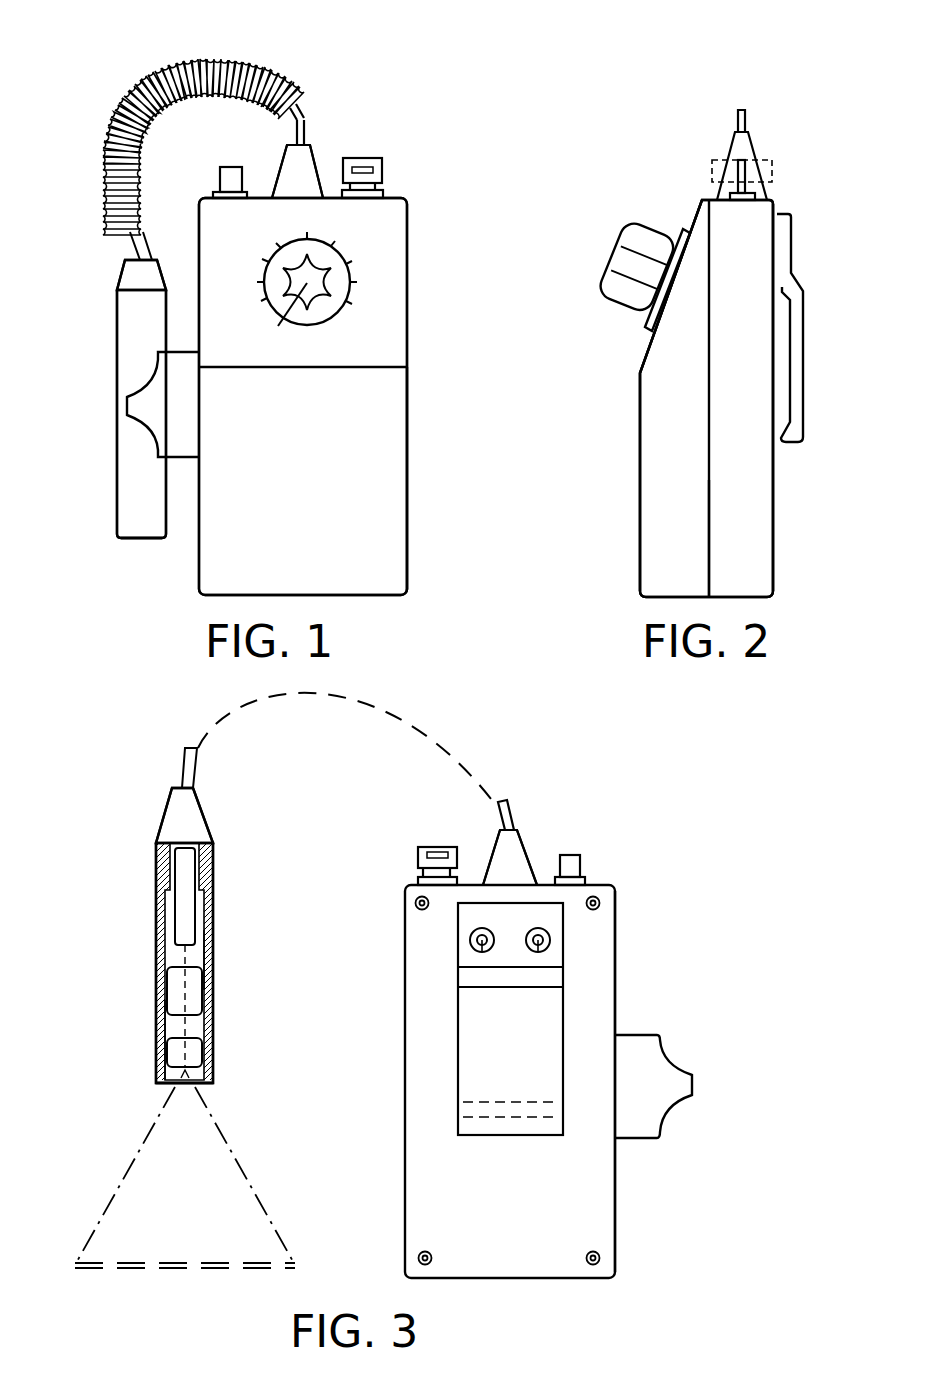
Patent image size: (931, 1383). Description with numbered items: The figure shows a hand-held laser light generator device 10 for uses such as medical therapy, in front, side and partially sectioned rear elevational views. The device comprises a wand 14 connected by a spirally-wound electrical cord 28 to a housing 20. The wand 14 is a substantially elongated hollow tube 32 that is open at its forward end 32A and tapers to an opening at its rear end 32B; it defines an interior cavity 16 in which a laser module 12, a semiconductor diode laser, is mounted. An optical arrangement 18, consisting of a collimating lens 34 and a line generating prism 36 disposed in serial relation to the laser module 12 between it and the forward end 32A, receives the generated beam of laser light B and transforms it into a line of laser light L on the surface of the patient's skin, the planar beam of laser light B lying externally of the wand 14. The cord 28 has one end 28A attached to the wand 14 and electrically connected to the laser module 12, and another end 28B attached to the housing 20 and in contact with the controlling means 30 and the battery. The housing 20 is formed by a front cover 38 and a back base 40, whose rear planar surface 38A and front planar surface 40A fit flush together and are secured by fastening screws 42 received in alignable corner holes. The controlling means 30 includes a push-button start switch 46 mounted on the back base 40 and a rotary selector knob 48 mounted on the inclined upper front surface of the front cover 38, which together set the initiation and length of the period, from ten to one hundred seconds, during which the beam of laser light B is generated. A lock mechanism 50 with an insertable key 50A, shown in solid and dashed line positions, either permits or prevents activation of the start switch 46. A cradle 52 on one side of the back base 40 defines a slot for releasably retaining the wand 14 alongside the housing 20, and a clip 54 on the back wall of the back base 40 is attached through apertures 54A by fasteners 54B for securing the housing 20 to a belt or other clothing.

In FIG. 1, the hand-held laser light generator device 10 is at (436, 196).
In FIG. 2, the hand-held laser light generator device 10 is at (800, 177).
In FIG. 3, the laser module 12 is at (187, 868).
In FIG. 1, the wand 14 is at (108, 312).
In FIG. 3, the wand 14 is at (216, 902).
In FIG. 3, the interior cavity 16 is at (203, 963).
In FIG. 3, the optical arrangement 18 is at (163, 1025).
In FIG. 1, the housing 20 is at (410, 381).
In FIG. 2, the housing 20 is at (777, 490).
In FIG. 3, the housing 20 is at (620, 952).
In FIG. 1, the electrical cord 28 is at (168, 72).
In FIG. 2, the electrical cord 28 is at (738, 113).
In FIG. 3, the electrical cord 28 is at (505, 812).
In FIG. 1, the one end of the cord 28A is at (150, 258).
In FIG. 3, the one end of the cord 28A is at (178, 758).
In FIG. 1, the other end of the cord 28B is at (304, 112).
In FIG. 2, the other end of the cord 28B is at (750, 123).
In FIG. 3, the other end of the cord 28B is at (500, 812).
In FIG. 1, the controlling means 30 is at (248, 158).
In FIG. 3, the controlling means 30 is at (460, 867).
In FIG. 1, the hollow tube 32 is at (115, 463).
In FIG. 3, the hollow tube 32 is at (160, 950).
In FIG. 1, the forward end of the tube 32A is at (128, 542).
In FIG. 3, the forward end of the tube 32A is at (205, 1087).
In FIG. 1, the rear end of the tube 32B is at (117, 292).
In FIG. 3, the rear end of the tube 32B is at (190, 843).
In FIG. 3, the collimating lens 34 is at (200, 1000).
In FIG. 3, the line generating prism 36 is at (205, 1056).
In FIG. 1, the front cover 38 is at (400, 522).
In FIG. 2, the front cover 38 is at (650, 500).
In FIG. 2, the rear planar surface 38A is at (709, 535).
In FIG. 2, the back base 40 is at (770, 548).
In FIG. 3, the back base 40 is at (600, 1190).
In FIG. 2, the front planar surface 40A is at (709, 440).
In FIG. 3, the fastening screws 42 is at (600, 902).
In FIG. 1, the start switch 46 is at (226, 167).
In FIG. 3, the start switch 46 is at (576, 855).
In FIG. 1, the selector knob 48 is at (330, 275).
In FIG. 2, the selector knob 48 is at (612, 252).
In FIG. 1, the lock mechanism 50 is at (386, 193).
In FIG. 2, the lock mechanism 50 is at (742, 200).
In FIG. 3, the lock mechanism 50 is at (418, 882).
In FIG. 1, the key 50A is at (366, 158).
In FIG. 2, the key 50A is at (735, 165).
In FIG. 3, the key 50A is at (434, 850).
In FIG. 1, the cradle 52 is at (188, 437).
In FIG. 3, the cradle 52 is at (644, 1035).
In FIG. 2, the clip 54 is at (806, 328).
In FIG. 3, the clip 54 is at (550, 1043).
In FIG. 3, the apertures of the clip 54A is at (538, 950).
In FIG. 3, the fasteners 54B is at (487, 932).
In FIG. 3, the beam of laser light B is at (260, 1196).
In FIG. 3, the line of laser light L is at (148, 1262).